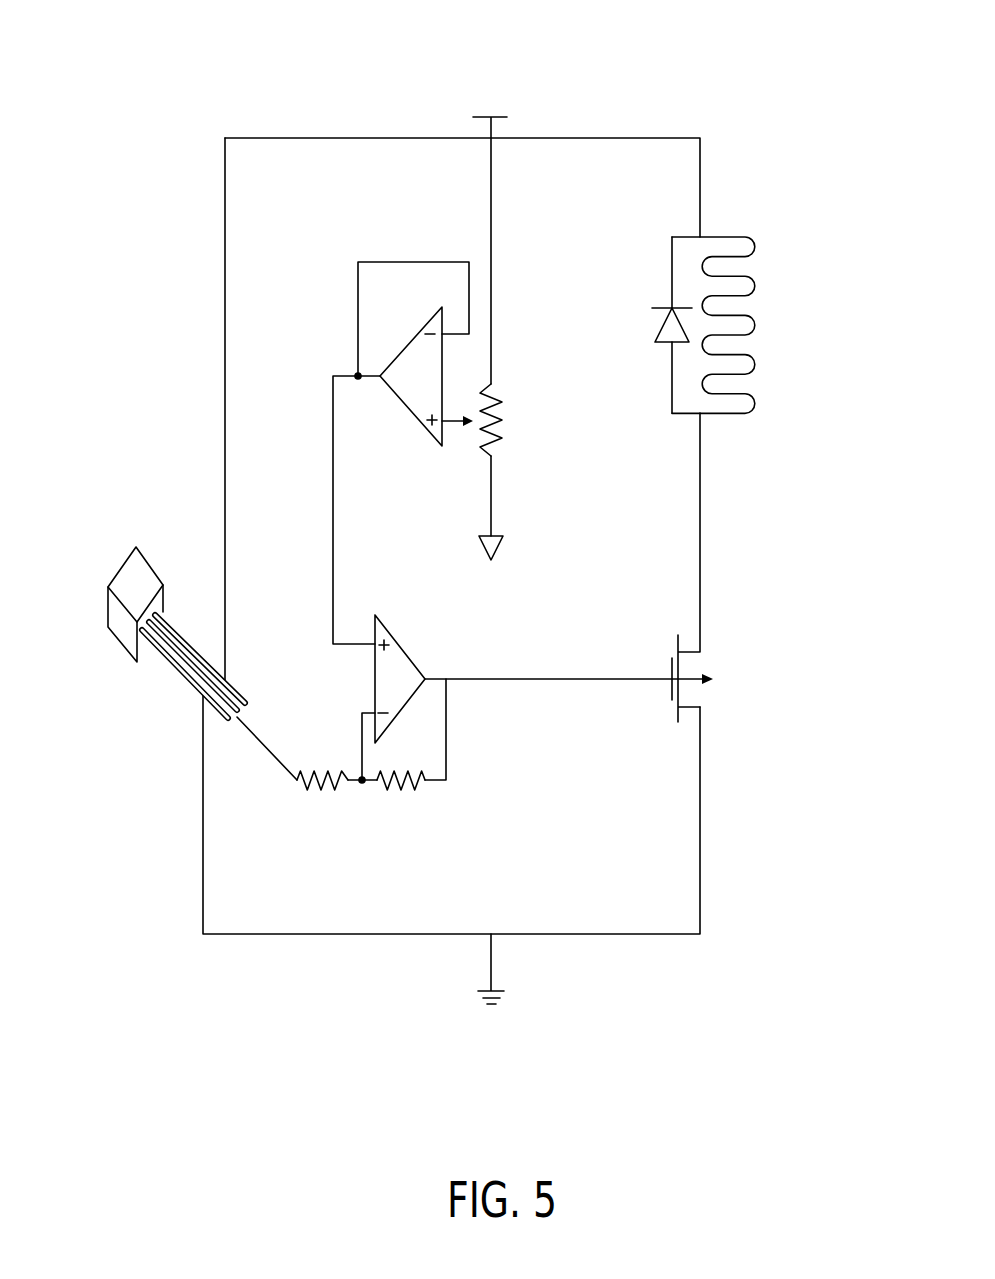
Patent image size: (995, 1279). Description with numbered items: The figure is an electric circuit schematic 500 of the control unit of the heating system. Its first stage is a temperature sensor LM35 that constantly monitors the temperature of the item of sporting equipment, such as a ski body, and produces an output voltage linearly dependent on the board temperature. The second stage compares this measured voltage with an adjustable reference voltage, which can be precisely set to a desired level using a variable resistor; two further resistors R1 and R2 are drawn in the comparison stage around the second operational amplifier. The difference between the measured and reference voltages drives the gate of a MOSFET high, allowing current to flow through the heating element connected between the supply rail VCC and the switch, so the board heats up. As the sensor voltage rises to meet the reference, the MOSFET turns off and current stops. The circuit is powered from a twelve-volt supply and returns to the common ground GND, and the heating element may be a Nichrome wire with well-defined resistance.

The electric circuit schematic 500 is at (180, 68).
The resistor R1 is at (322, 801).
The resistor R2 is at (401, 801).
The temperature sensor LM35 is at (176, 628).
The supply voltage VCC is at (492, 231).
The ground GND is at (491, 986).